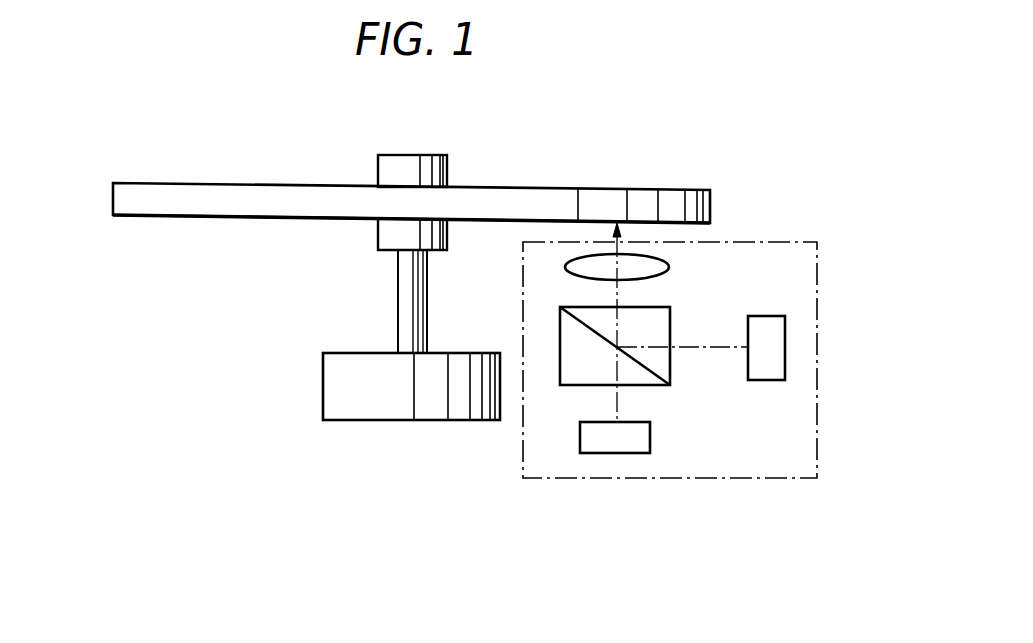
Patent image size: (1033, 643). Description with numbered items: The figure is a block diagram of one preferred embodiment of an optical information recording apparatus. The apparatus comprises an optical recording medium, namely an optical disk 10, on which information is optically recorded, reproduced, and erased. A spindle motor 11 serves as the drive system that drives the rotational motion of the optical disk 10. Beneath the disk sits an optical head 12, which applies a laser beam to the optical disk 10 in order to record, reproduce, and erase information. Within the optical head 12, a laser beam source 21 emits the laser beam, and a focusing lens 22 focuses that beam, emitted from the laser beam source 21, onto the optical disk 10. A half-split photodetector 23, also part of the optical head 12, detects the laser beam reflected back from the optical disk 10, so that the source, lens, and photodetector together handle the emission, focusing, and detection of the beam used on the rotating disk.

The optical disk 10 is at (215, 183).
The spindle motor 11 is at (345, 421).
The optical head 12 is at (667, 372).
The laser beam source 21 is at (580, 437).
The focusing lens 22 is at (668, 267).
The half-split photodetector 23 is at (760, 381).